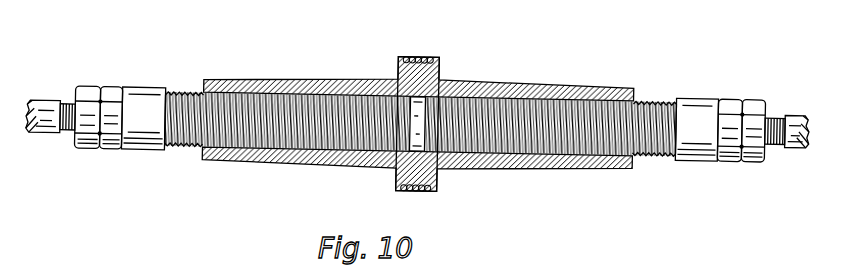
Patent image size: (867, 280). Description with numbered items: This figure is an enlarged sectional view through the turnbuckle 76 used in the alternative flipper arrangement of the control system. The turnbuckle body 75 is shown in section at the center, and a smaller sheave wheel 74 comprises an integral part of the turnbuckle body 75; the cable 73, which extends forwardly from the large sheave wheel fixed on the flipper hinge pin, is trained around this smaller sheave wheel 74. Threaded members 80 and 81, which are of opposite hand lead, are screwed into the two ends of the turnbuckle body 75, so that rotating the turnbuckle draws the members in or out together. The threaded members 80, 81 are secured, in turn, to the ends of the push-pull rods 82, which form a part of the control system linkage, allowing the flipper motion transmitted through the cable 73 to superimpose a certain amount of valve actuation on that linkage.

The cable 73 is at (417, 57).
The smaller sheave wheel 74 is at (396, 72).
The turnbuckle body 75 is at (306, 162).
The turnbuckle 76 is at (290, 72).
The threaded member 80 is at (176, 93).
The threaded member 81 is at (667, 98).
The push-pull rod 82 is at (54, 100).